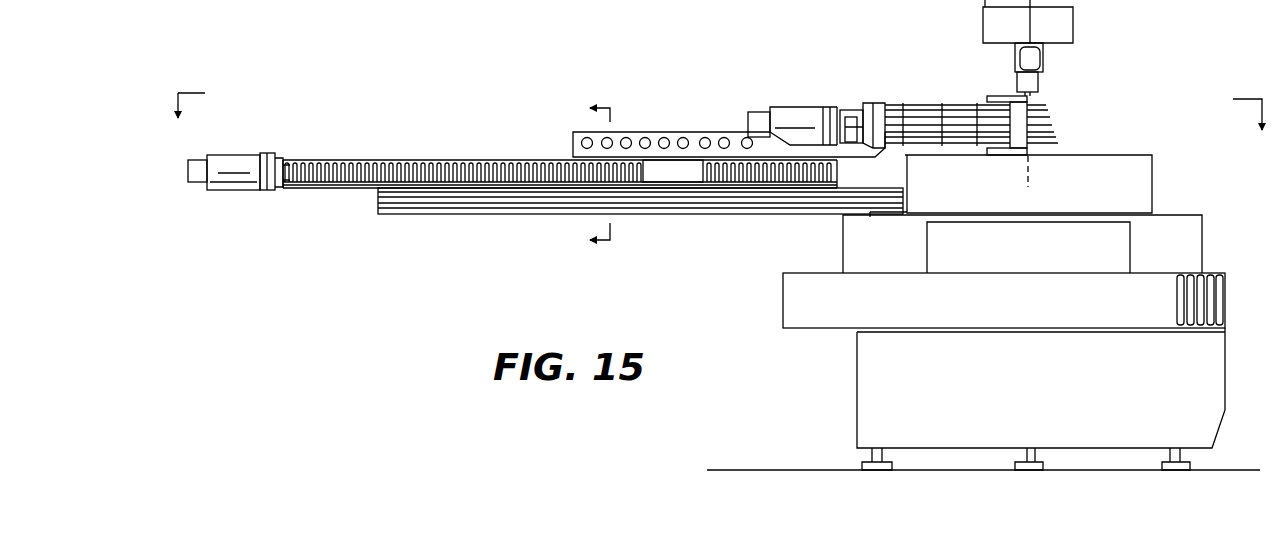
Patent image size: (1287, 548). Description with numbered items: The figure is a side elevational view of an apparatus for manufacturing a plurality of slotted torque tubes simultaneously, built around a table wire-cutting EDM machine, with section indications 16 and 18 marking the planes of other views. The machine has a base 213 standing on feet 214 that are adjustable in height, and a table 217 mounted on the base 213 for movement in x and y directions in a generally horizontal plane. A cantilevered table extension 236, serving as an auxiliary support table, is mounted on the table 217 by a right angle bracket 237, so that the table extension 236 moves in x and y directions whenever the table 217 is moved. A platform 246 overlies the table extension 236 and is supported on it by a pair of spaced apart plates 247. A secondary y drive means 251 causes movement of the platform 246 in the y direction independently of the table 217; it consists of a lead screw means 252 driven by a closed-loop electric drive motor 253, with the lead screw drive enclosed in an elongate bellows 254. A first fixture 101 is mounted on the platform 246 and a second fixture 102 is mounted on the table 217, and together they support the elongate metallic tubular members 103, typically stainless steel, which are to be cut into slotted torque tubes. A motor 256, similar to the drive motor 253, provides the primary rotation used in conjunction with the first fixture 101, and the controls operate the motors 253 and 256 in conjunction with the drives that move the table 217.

The section line 16- 16 is at (725, 97).
The section line 18- 18 is at (608, 172).
The first fixture 101 is at (876, 105).
The second fixture 102 is at (1013, 123).
The elongate metallic tubular members 103 is at (950, 68).
The base 213 is at (1040, 397).
The feet 214 is at (865, 463).
The table 217 is at (1130, 173).
The cantilevered table extension 236 is at (453, 214).
The right angle bracket 237 is at (880, 217).
The platform 246 is at (693, 132).
The spaced apart plates 247 is at (665, 172).
The secondary y drive means 251 is at (383, 160).
The lead screw means 252 is at (283, 153).
The electric drive motor 253 is at (230, 157).
The elongate bellows 254 is at (455, 160).
The motor 256 is at (798, 120).